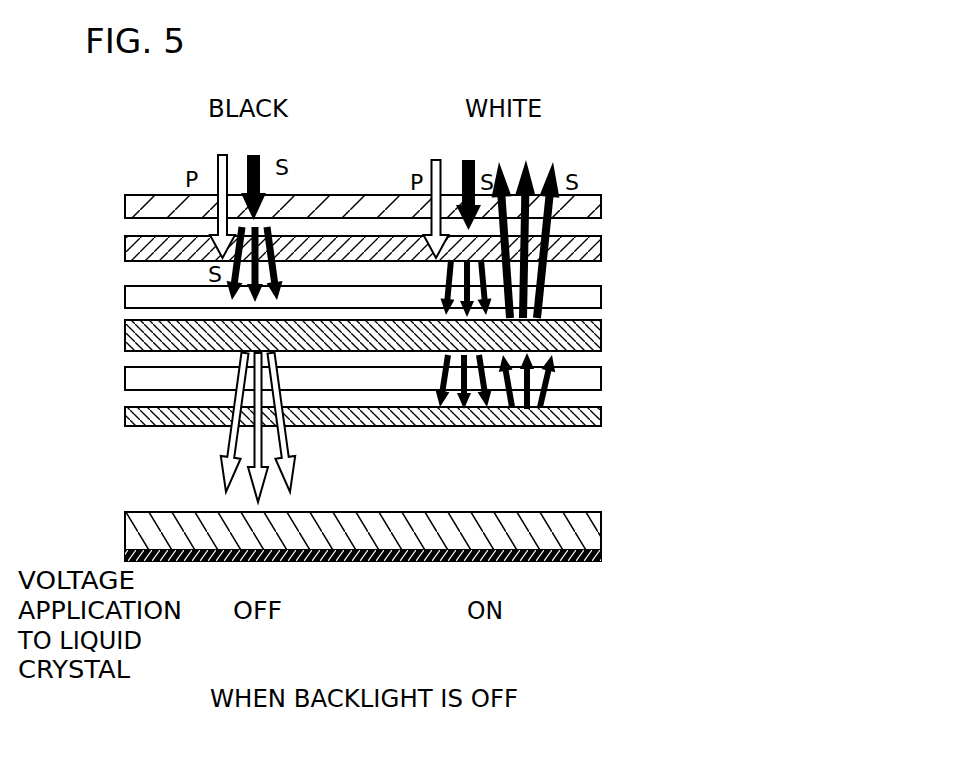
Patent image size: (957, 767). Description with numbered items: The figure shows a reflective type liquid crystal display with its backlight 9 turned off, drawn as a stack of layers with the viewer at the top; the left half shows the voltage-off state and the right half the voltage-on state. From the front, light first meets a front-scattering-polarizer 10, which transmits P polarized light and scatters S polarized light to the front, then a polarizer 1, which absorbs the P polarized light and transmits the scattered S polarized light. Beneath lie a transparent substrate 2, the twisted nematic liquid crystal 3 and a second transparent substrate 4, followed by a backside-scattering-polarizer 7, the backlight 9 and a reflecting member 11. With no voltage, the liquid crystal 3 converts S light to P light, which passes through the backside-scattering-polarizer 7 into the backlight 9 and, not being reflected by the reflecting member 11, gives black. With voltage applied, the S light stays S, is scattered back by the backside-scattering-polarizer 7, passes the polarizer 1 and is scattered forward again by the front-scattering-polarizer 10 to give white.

The front-scattering-polarizer 10 is at (601, 207).
The polarizer 1 is at (601, 248).
The transparent substrate 2 is at (601, 297).
The liquid crystal 3 is at (601, 335).
The transparent substrate 4 is at (601, 378).
The backside-scattering-polarizer 7 is at (601, 417).
The backlight 9 is at (601, 518).
The reflecting member 11 is at (601, 552).